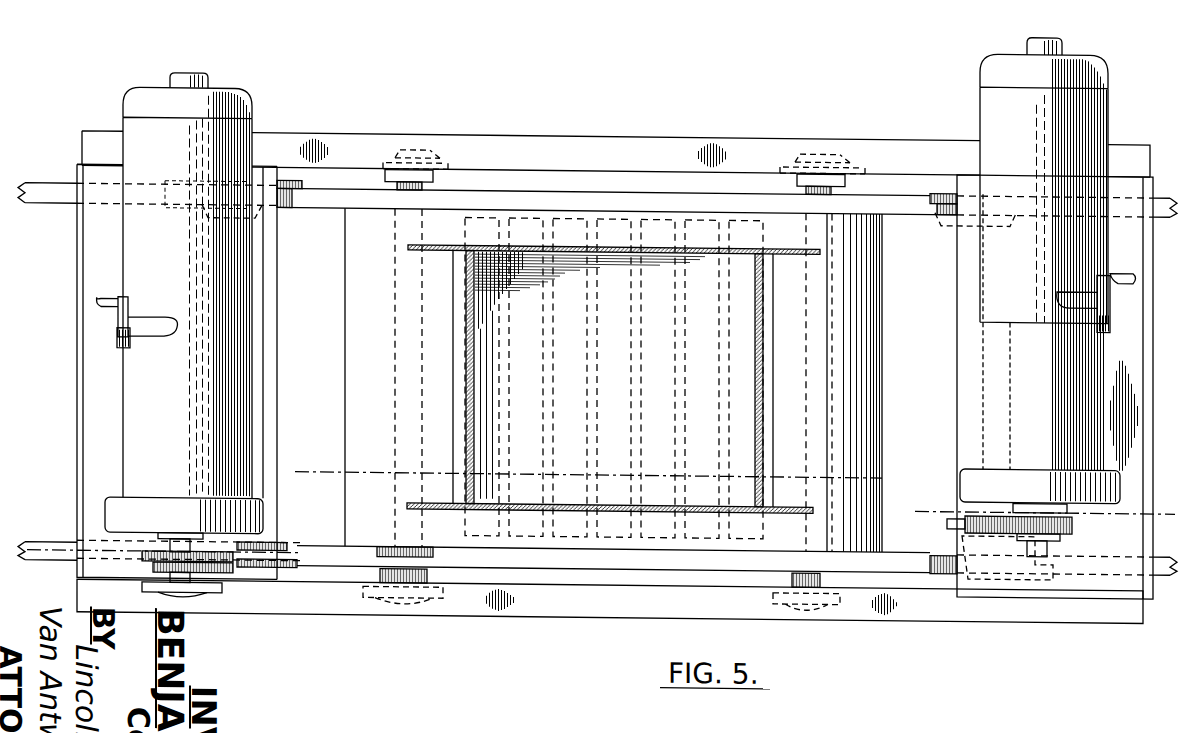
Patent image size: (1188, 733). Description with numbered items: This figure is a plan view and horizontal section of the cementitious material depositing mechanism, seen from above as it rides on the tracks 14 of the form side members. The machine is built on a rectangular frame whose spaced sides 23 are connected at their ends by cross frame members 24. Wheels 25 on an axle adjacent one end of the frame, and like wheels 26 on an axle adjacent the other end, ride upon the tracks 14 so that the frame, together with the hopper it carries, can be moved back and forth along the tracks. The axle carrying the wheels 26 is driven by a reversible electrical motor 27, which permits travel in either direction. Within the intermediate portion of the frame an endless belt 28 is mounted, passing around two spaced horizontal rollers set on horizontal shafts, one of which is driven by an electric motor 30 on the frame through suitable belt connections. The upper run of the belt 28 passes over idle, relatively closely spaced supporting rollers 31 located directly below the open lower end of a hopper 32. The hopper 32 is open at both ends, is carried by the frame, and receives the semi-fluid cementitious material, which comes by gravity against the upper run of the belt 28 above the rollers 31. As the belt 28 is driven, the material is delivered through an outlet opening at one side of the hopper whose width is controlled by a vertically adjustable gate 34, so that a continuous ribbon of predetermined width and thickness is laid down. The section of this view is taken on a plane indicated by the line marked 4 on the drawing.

The section line 4- 4 is at (40, 518).
The track 14 is at (513, 206).
The spaced sides 23 is at (615, 153).
The cross frame members 24 is at (77, 394).
The wheels 25 is at (283, 214).
The wheels 26 is at (950, 205).
The reversible electrical motor 27 is at (1020, 343).
The endless belt 28 is at (773, 532).
The electric motor 30 is at (205, 407).
The supporting rollers 31 is at (690, 530).
The hopper 32 is at (612, 512).
The vertically adjustable gate 34 is at (766, 333).